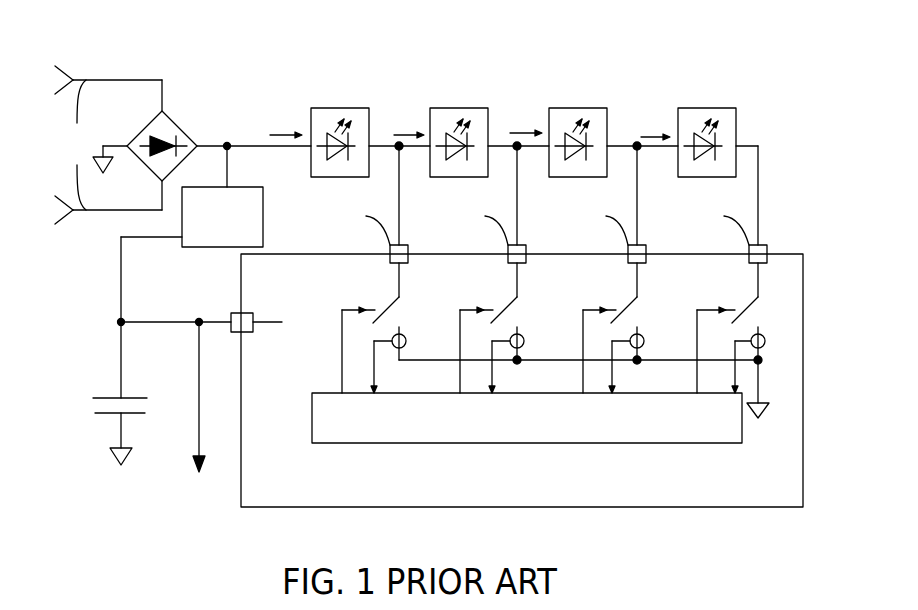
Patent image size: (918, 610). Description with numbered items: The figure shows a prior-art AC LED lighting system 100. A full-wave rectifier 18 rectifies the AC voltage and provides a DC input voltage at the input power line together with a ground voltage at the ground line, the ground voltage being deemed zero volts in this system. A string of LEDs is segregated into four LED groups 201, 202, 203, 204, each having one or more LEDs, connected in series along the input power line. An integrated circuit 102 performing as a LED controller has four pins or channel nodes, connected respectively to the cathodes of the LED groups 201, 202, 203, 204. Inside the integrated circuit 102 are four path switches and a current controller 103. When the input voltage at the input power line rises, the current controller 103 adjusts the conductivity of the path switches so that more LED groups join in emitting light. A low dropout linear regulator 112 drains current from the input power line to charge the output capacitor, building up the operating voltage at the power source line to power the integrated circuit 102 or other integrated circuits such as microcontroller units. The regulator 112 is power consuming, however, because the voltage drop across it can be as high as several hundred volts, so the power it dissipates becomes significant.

The AC LED lighting system 100 is at (257, 70).
The full-wave rectifier 18 is at (173, 117).
The LED group 201 is at (340, 108).
The LED group 202 is at (459, 108).
The LED group 203 is at (578, 108).
The LED group 204 is at (707, 108).
The low dropout linear regulator 112 is at (238, 242).
The integrated circuit 102 is at (300, 283).
The current controller 103 is at (631, 432).